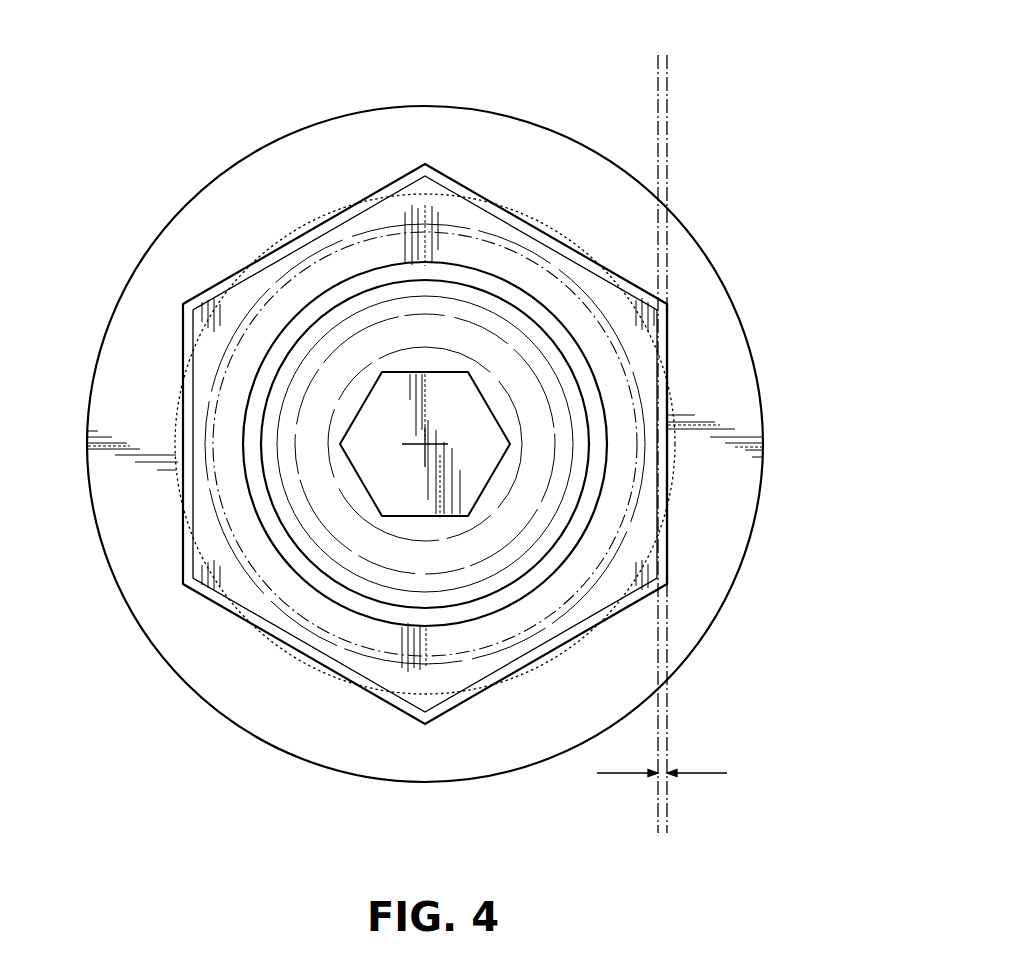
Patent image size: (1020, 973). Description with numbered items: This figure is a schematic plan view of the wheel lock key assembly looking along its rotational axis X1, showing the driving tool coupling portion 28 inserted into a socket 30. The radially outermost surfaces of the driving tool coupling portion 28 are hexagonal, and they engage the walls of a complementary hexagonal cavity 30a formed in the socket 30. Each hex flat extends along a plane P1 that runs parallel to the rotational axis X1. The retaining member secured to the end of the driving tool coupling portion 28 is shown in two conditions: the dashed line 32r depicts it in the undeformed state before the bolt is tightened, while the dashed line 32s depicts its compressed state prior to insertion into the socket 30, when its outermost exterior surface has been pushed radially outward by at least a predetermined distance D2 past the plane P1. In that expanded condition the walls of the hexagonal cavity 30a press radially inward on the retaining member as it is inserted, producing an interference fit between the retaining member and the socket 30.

The socket 30 is at (113, 312).
The driving tool coupling portion 28 is at (658, 355).
The hexagonal cavity 30a is at (667, 387).
The dashed line showing compressed retaining member 32s is at (397, 190).
The dashed line showing undeformed retaining member 32r is at (470, 230).
The plane P1 is at (657, 113).
The predetermined distance D2 is at (697, 772).
The rotational axis X1 is at (425, 444).